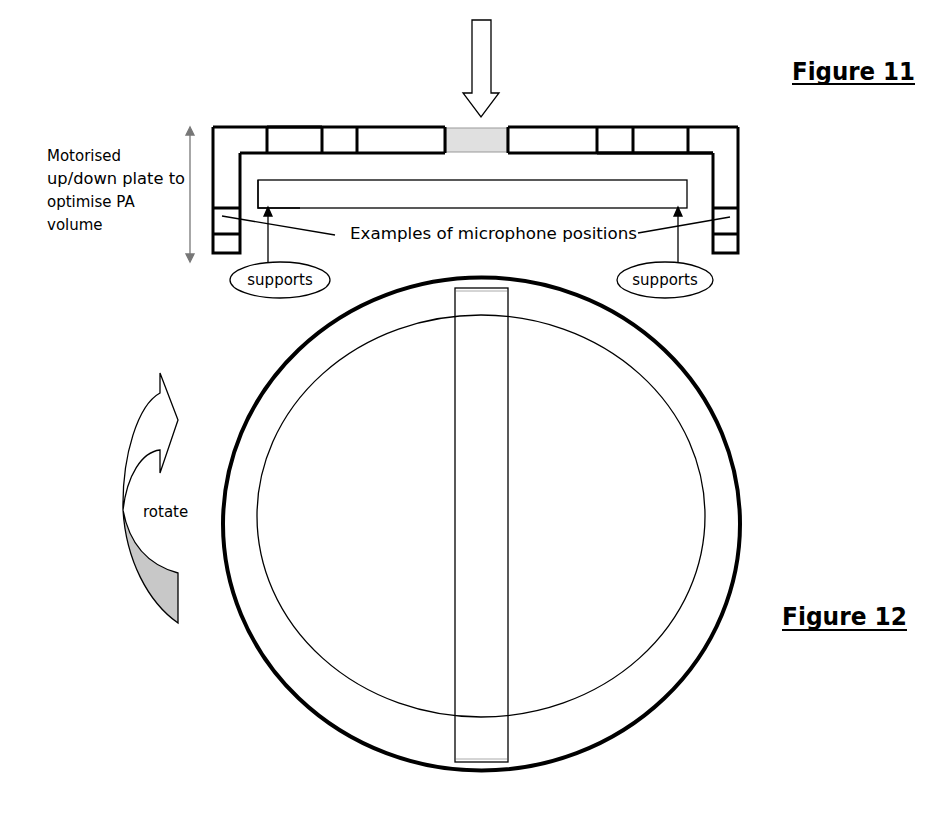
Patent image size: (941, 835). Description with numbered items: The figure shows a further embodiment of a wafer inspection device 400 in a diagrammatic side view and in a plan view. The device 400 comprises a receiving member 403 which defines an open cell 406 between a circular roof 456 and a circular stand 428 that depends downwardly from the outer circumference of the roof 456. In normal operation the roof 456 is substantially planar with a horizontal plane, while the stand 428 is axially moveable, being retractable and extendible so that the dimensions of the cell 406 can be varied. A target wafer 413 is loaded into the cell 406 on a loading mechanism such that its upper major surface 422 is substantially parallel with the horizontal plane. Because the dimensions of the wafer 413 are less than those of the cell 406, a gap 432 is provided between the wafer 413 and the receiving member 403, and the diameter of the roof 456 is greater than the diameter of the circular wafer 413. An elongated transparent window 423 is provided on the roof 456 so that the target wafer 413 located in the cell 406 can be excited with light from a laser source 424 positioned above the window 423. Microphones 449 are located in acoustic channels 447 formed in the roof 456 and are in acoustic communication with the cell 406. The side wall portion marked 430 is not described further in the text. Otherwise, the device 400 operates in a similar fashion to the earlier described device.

In FIG. 11, the wafer inspection device 400 is at (692, 68).
In FIG. 11, the receiving member 403 is at (277, 145).
In FIG. 11, the open cell 406 is at (623, 162).
In FIG. 11, the target wafer 413 is at (275, 188).
In FIG. 12, the target wafer 413 is at (705, 547).
In FIG. 11, the upper major surface 422 is at (383, 190).
In FIG. 11, the elongated transparent window 423 is at (490, 137).
In FIG. 12, the elongated transparent window 423 is at (472, 387).
In FIG. 11, the laser source 424 is at (498, 55).
In FIG. 11, the circular stand 428 is at (697, 188).
In FIG. 11, the left side wall 430 is at (223, 180).
In FIG. 11, the gap 432 is at (722, 188).
In FIG. 11, the acoustic channels 447 is at (340, 135).
In FIG. 11, the microphones 449 is at (607, 137).
In FIG. 11, the circular roof 456 is at (293, 135).
In FIG. 12, the circular roof 456 is at (748, 493).